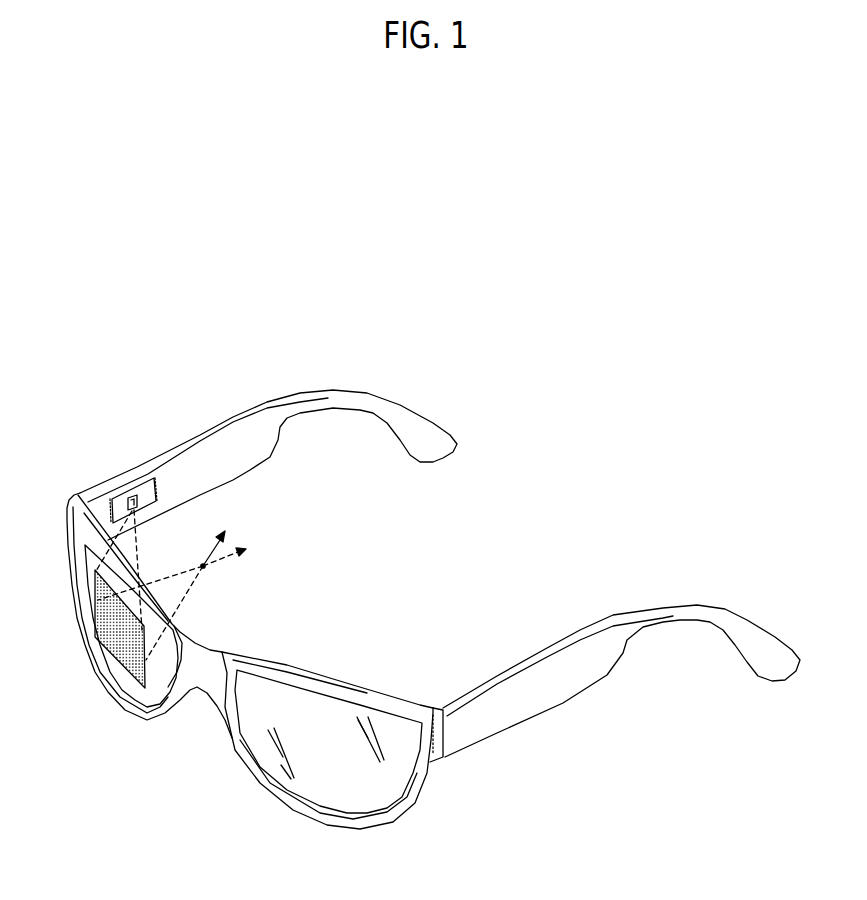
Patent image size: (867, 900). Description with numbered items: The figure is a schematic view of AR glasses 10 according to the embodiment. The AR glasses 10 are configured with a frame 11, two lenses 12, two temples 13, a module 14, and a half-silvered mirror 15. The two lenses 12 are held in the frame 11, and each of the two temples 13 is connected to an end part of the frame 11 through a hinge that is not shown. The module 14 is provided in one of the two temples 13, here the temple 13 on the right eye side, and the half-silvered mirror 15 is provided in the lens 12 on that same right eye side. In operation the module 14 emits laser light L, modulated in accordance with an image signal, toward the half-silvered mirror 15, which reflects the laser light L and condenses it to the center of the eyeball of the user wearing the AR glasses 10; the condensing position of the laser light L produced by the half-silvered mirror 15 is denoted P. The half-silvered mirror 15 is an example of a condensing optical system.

The AR glasses 10 is at (563, 436).
The frame 11 is at (280, 663).
The lens 12 is at (122, 682).
The temple 13 is at (192, 438).
The module 14 is at (147, 482).
The half-silvered mirror 15 is at (110, 640).
The laser light L is at (140, 549).
The condensing position P is at (207, 568).